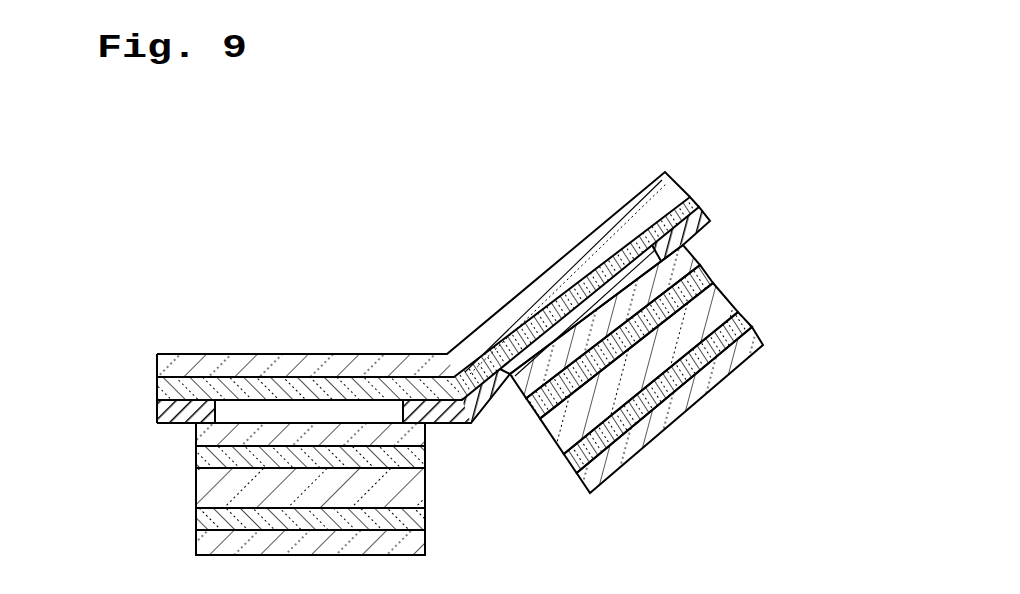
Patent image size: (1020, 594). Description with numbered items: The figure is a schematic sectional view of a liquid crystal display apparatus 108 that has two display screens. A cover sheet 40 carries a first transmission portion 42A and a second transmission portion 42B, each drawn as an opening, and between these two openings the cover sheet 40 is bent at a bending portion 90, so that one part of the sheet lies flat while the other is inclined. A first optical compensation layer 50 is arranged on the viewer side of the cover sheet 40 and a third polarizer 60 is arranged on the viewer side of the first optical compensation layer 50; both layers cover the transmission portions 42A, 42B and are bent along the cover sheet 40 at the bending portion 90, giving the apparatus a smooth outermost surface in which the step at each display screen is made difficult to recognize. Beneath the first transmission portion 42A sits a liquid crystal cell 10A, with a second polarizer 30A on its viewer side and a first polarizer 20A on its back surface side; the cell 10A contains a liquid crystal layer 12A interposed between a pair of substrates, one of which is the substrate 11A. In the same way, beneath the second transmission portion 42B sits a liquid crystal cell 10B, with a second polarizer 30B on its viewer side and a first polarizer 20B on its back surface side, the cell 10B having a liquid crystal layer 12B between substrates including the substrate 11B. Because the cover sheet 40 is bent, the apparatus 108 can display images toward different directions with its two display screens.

The liquid crystal display apparatus 108 is at (515, 118).
The third polarizer 60 is at (678, 182).
The first optical compensation layer 50 is at (696, 204).
The cover sheet 40 is at (707, 215).
The first transmission portion 42A is at (302, 410).
The second transmission portion 42B is at (588, 307).
The bending portion 90 is at (440, 332).
The liquid crystal cell 10A is at (247, 494).
The second polarizer 30A is at (197, 433).
The substrate 11A is at (197, 454).
The liquid crystal layer 12A is at (197, 491).
The first polarizer 20A is at (272, 547).
The liquid crystal cell 10B is at (678, 358).
The second polarizer 30B is at (690, 250).
The substrate 11B is at (700, 271).
The liquid crystal layer 12B is at (717, 293).
The first polarizer 20B is at (757, 336).